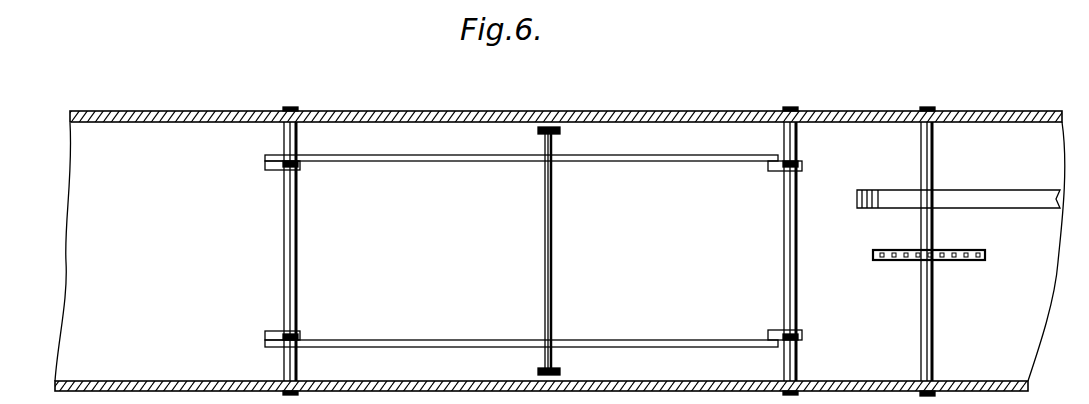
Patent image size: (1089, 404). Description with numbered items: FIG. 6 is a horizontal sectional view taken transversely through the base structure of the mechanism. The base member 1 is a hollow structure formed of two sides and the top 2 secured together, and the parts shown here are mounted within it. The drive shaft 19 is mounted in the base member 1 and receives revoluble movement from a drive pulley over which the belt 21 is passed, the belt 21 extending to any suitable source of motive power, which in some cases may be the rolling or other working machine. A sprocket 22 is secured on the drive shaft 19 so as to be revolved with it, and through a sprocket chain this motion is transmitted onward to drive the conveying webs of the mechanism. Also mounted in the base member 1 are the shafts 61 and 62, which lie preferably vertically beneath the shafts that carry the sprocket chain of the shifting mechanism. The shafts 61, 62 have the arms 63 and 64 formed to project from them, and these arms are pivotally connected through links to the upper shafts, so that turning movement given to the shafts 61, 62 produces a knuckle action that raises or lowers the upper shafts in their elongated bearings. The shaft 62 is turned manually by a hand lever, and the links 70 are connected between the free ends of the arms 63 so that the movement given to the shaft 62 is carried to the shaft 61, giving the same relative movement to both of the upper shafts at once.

The base member 1 is at (63, 268).
The top 2 is at (238, 108).
The drive shaft 19 is at (930, 348).
The belt 21 is at (984, 194).
The sprocket 22 is at (957, 260).
The shaft 61 is at (786, 248).
The shaft 62 is at (285, 264).
The arm 63 is at (769, 166).
The arm 64 is at (265, 165).
The links 70 is at (470, 340).